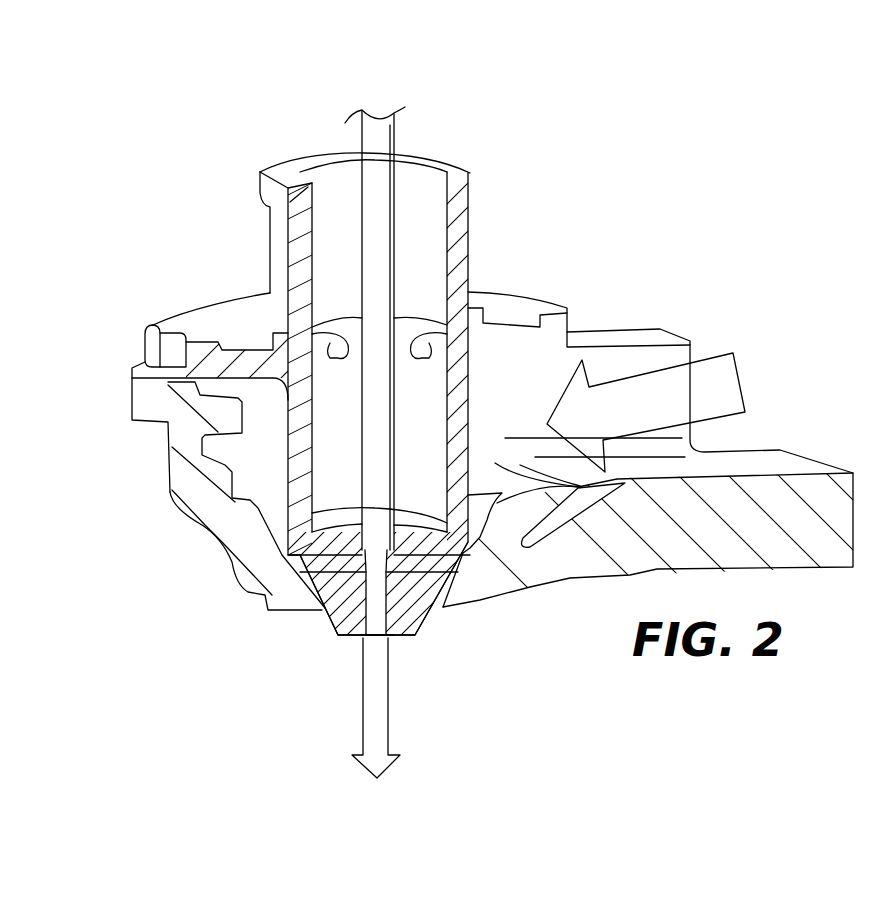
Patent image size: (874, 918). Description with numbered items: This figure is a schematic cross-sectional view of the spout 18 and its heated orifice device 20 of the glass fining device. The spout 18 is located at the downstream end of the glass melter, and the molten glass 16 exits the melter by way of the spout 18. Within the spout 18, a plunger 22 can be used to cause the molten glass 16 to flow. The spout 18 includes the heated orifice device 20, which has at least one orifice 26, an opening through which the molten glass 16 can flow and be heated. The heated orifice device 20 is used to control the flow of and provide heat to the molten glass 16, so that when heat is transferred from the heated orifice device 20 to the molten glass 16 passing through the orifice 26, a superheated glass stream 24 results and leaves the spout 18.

The molten glass 16 is at (728, 397).
The spout 18 is at (256, 133).
The heated orifice device 20 is at (345, 615).
The plunger 22 is at (370, 398).
The superheated glass stream 24 is at (377, 675).
The orifice 26 is at (358, 642).